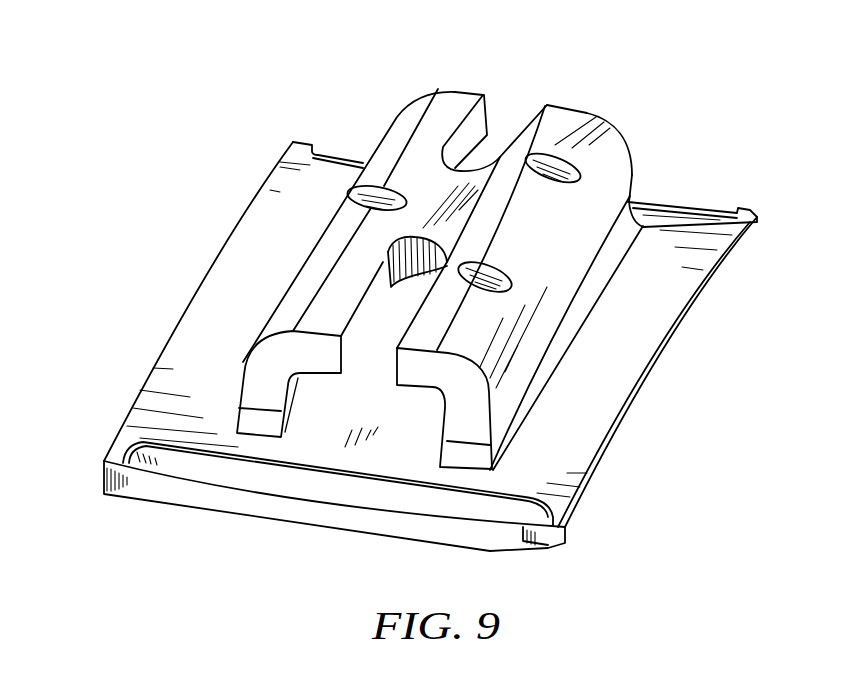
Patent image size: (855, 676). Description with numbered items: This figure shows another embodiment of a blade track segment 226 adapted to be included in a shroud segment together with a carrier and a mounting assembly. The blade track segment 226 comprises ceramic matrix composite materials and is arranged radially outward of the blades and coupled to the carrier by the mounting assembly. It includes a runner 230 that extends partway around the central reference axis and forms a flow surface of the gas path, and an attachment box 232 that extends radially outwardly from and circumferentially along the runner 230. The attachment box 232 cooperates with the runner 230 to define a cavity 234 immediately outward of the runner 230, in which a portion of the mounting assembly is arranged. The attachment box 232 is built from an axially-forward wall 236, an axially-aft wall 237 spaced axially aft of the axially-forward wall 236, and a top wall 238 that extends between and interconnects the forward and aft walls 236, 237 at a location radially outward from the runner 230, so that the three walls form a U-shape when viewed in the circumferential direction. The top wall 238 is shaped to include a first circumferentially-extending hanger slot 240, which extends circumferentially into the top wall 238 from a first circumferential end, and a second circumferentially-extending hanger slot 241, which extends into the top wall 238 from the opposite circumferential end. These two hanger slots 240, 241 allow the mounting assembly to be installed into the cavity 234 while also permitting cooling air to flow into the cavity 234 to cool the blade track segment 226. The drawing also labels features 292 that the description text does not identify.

The blade track segment 226 is at (128, 135).
The runner 230 is at (671, 386).
The attachment box 232 is at (649, 127).
The cavity 234 is at (357, 416).
The axially-forward wall 236 is at (226, 363).
The axially-aft wall 237 is at (508, 420).
The top wall 238 is at (434, 176).
The first circumferentially-extending hanger slot 240 is at (372, 315).
The second circumferentially-extending hanger slot 241 is at (515, 106).
The holes 292 is at (358, 178).